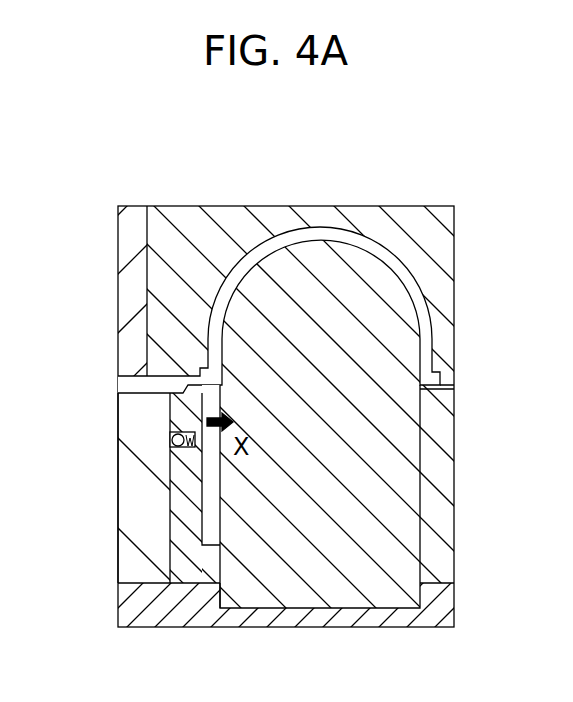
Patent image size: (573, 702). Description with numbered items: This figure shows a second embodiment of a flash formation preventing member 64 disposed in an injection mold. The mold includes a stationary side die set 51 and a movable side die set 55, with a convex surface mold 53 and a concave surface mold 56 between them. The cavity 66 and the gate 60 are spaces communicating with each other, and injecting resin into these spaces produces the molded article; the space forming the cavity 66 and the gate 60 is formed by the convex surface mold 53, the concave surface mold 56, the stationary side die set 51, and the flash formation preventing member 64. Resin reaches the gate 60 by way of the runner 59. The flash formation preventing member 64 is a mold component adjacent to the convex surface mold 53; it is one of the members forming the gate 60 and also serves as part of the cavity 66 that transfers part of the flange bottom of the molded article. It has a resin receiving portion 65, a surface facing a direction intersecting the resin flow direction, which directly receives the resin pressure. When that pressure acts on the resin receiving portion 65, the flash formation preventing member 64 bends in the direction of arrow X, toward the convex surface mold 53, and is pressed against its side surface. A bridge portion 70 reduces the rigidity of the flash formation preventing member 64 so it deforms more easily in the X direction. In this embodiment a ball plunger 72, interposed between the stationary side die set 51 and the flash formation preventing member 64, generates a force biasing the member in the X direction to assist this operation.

The stationary side die set 51 is at (132, 520).
The convex surface mold 53 is at (325, 572).
The movable side die set 55 is at (130, 280).
The concave surface mold 56 is at (198, 222).
The runner 59 is at (133, 386).
The gate 60 is at (200, 372).
The flash formation preventing member 64 is at (195, 565).
The resin receiving portion 65 is at (197, 393).
The cavity 66 is at (325, 242).
The bridge portion 70 is at (185, 450).
The ball plunger 72 is at (172, 430).